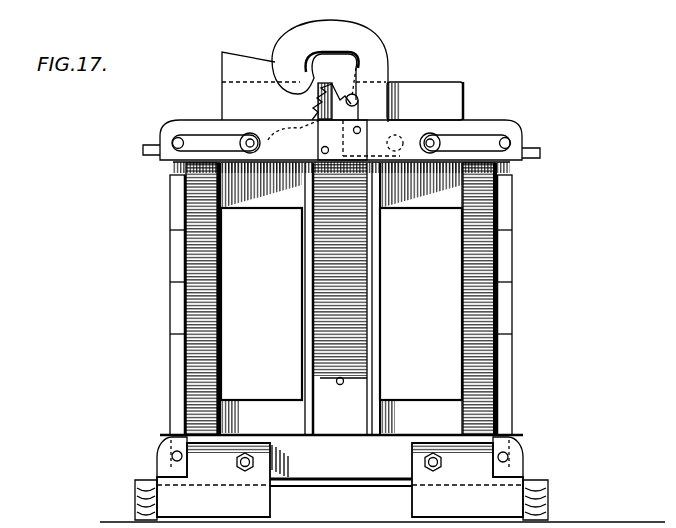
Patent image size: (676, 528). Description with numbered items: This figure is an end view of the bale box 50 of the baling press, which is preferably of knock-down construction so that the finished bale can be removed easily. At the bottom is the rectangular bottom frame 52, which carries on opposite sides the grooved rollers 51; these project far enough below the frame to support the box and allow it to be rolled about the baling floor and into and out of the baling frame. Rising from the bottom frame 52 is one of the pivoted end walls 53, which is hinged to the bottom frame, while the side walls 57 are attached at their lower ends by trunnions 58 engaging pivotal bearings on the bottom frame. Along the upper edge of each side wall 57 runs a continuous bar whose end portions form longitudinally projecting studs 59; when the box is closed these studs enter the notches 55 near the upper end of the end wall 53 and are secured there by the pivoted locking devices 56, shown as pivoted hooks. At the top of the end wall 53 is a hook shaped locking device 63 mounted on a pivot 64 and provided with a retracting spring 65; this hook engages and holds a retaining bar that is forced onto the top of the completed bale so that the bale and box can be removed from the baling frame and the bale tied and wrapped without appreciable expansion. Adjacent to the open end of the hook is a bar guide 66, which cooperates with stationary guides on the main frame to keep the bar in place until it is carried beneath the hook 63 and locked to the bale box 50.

The bale box 50 is at (363, 277).
The grooved rollers 51 is at (143, 493).
The bottom frame 52 is at (262, 507).
The end walls 53 is at (470, 333).
The notches 55 is at (165, 135).
The locking devices 56 is at (208, 134).
The side walls 57 is at (175, 310).
The trunnions 58 is at (172, 456).
The studs 59 is at (507, 140).
The hook shaped locking device 63 is at (368, 53).
The pivot 64 is at (400, 138).
The retracting spring 65 is at (318, 112).
The bar guide 66 is at (233, 72).